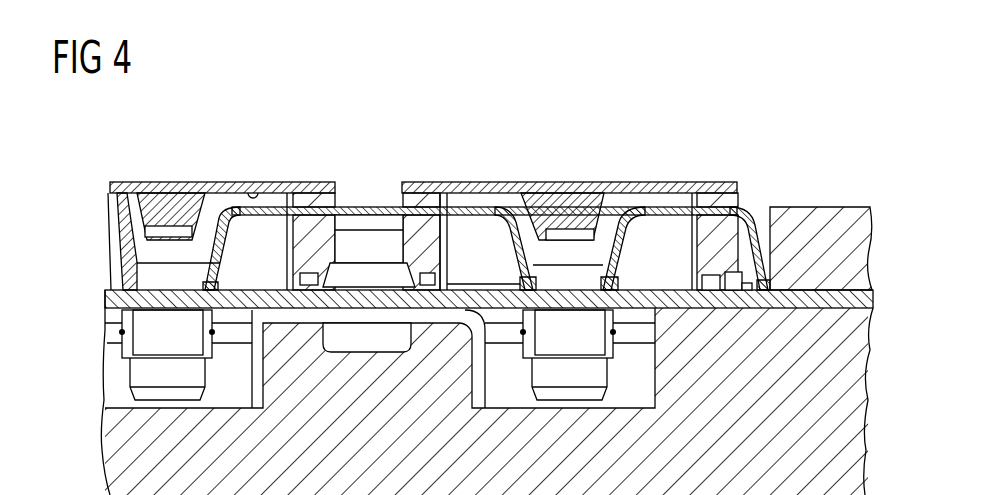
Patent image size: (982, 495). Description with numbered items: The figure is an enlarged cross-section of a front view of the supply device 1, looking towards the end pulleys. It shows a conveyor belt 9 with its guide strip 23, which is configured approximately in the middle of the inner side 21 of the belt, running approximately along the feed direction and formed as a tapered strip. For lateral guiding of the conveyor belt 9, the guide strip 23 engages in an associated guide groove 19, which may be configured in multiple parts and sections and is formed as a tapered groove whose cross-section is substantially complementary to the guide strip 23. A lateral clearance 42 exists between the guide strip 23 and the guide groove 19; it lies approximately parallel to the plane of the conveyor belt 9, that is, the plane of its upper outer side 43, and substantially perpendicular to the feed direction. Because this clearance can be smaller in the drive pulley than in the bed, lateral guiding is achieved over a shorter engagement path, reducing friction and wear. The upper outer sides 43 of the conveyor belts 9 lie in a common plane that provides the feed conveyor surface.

The supply device 1 is at (780, 152).
The conveyor belt 9 is at (306, 182).
The guide groove 19 is at (207, 190).
The inner side 21 is at (257, 182).
The guide strip 23 is at (117, 211).
The lateral clearance 42 is at (150, 225).
The upper outer side 43 is at (180, 166).